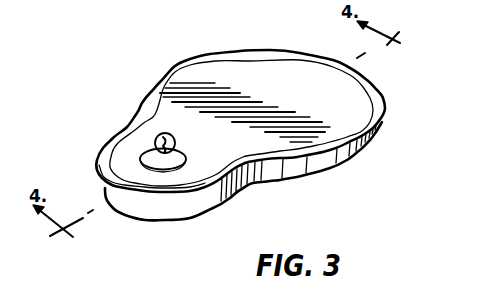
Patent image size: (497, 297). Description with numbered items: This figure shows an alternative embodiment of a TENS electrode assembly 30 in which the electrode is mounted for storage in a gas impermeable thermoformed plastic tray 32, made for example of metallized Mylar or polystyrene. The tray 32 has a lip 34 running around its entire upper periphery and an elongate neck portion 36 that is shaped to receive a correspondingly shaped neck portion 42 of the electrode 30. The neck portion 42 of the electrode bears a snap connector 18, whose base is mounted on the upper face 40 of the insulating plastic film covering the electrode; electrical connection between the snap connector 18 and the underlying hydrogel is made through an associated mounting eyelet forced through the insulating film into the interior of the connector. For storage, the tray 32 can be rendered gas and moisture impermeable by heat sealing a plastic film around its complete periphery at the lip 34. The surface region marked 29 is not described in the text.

The snap connector 18 is at (175, 144).
The dished receptacle surface 29 is at (256, 68).
The TENS electrode assembly 30 is at (183, 61).
The thermoformed plastic tray 32 is at (349, 167).
The lip 34 is at (281, 160).
The elongate neck portion 36 is at (203, 201).
The upper face of insulating film 40 is at (347, 125).
The neck portion of electrode 42 is at (127, 145).